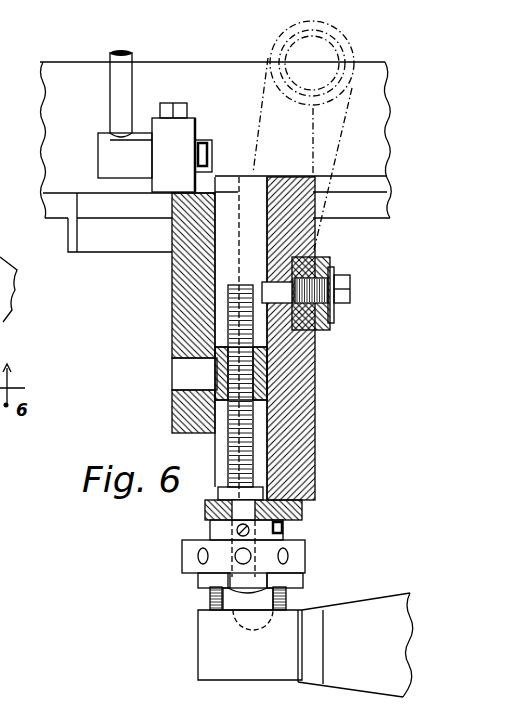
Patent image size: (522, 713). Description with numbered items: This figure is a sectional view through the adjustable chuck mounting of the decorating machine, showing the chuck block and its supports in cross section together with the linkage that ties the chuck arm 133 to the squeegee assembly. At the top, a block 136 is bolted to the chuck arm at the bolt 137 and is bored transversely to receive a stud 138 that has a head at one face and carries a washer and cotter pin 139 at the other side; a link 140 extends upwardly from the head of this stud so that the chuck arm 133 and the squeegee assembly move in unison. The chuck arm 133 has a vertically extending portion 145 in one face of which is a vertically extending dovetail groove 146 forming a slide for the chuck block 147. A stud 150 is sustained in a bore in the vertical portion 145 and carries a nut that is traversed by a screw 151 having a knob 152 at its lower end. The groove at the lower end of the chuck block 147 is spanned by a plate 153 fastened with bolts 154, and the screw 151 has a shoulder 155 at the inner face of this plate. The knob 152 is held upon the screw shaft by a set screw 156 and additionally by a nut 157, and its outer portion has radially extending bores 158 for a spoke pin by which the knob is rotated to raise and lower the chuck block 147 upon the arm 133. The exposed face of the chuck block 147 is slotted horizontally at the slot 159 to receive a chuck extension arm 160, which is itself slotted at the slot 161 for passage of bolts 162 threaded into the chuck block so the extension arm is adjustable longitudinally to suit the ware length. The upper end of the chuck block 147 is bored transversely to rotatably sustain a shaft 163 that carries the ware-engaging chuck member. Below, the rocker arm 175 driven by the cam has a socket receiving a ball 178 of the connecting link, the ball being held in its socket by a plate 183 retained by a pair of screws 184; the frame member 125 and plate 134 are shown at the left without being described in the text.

The frame member 125 is at (13, 278).
The chuck arm 133 is at (137, 212).
The support plate 134 is at (77, 185).
The block 136 is at (160, 160).
The bolt 137 is at (180, 109).
The stud 138 is at (212, 157).
The washer and cotter pin 139 is at (213, 140).
The link 140 is at (124, 78).
The vertically extending portion 145 is at (172, 313).
The dovetail groove 146 is at (223, 310).
The chuck block 147 is at (298, 437).
The stud 150 is at (183, 372).
The screw 151 is at (233, 333).
The knob 152 is at (190, 556).
The plate 153 is at (302, 510).
The bolts 154 is at (286, 528).
The shoulder 155 is at (230, 492).
The set screw 156 is at (233, 530).
The nut 157 is at (242, 578).
The radially extending bores 158 is at (200, 558).
The slot 159 is at (306, 329).
The chuck extension arm 160 is at (332, 267).
The slot 161 is at (336, 278).
The bolts 162 is at (345, 298).
The shaft 163 is at (315, 50).
The rocker arm 175 is at (213, 653).
The ball 178 is at (258, 598).
The plates 183 is at (293, 582).
The screws 184 is at (277, 602).